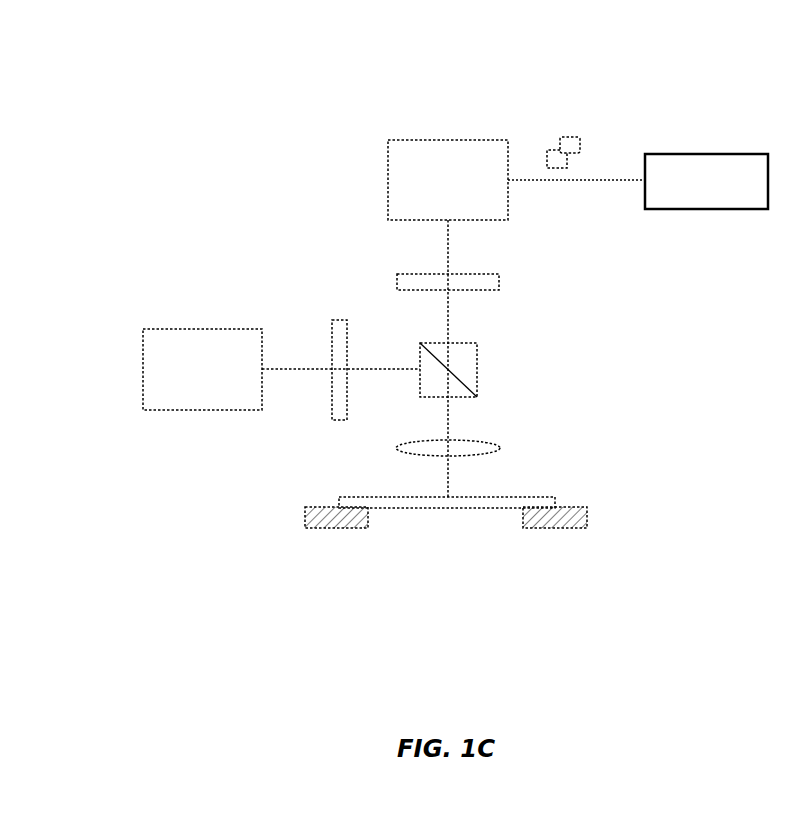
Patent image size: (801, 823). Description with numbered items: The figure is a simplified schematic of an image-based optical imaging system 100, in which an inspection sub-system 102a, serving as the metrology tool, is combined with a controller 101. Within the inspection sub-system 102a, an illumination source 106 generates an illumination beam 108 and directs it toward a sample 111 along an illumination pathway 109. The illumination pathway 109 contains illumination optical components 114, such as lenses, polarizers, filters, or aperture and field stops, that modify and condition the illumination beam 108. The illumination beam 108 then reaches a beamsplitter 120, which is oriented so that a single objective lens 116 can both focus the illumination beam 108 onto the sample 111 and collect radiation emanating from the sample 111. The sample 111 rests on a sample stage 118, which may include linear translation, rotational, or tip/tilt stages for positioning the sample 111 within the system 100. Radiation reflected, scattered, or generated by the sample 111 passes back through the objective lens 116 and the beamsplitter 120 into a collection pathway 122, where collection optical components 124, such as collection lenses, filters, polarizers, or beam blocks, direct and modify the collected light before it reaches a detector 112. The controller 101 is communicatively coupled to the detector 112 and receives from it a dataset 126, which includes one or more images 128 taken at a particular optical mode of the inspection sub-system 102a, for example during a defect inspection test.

The image-based optical imaging system 100 is at (250, 60).
The inspection sub-system 102a is at (210, 182).
The controller 101 is at (721, 190).
The illumination source 106 is at (217, 377).
The illumination beam 108 is at (300, 372).
The illumination pathway 109 is at (295, 297).
The sample 111 is at (532, 497).
The detector 112 is at (463, 189).
The illumination optical components 114 is at (340, 422).
The objective lens 116 is at (497, 441).
The sample stage 118 is at (590, 517).
The beamsplitter 120 is at (478, 368).
The collection pathway 122 is at (562, 289).
The collection optical components 124 is at (487, 275).
The dataset 126 is at (530, 95).
The images 128 is at (580, 133).